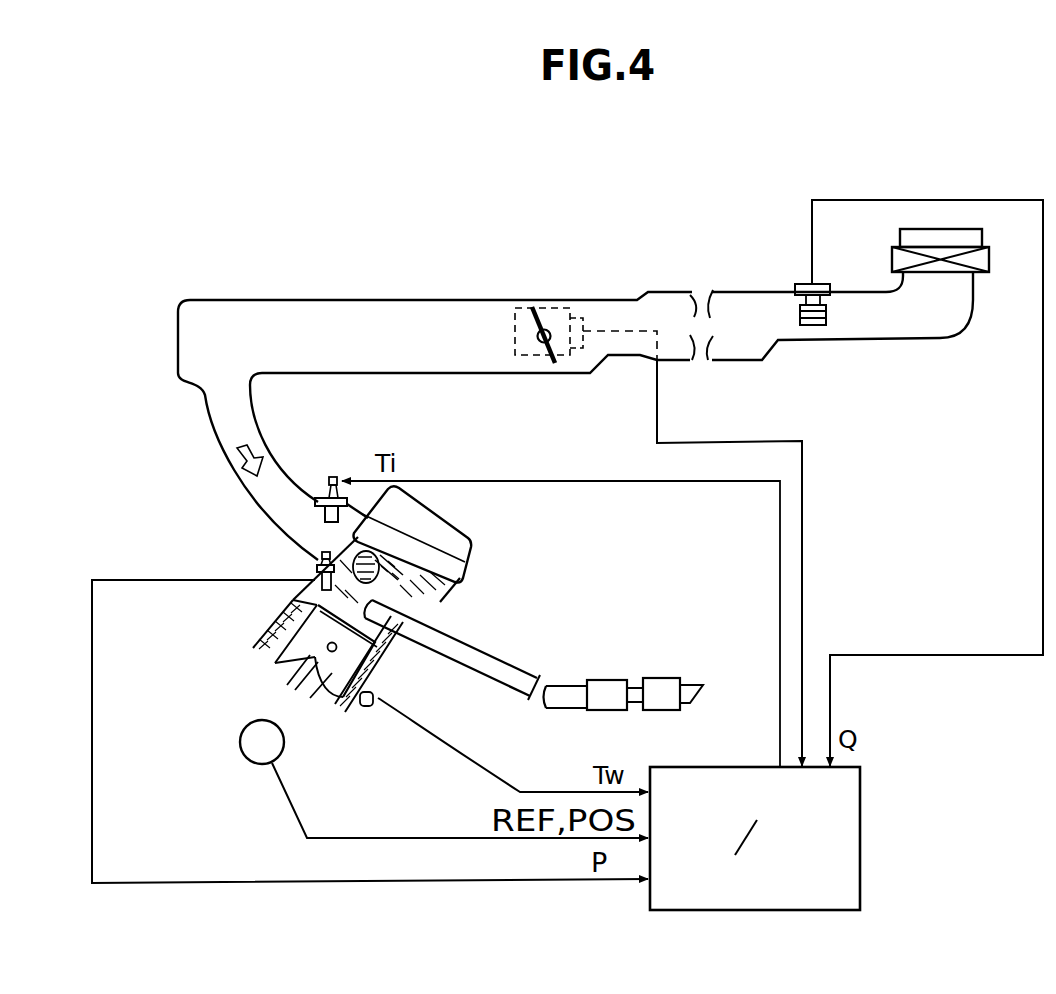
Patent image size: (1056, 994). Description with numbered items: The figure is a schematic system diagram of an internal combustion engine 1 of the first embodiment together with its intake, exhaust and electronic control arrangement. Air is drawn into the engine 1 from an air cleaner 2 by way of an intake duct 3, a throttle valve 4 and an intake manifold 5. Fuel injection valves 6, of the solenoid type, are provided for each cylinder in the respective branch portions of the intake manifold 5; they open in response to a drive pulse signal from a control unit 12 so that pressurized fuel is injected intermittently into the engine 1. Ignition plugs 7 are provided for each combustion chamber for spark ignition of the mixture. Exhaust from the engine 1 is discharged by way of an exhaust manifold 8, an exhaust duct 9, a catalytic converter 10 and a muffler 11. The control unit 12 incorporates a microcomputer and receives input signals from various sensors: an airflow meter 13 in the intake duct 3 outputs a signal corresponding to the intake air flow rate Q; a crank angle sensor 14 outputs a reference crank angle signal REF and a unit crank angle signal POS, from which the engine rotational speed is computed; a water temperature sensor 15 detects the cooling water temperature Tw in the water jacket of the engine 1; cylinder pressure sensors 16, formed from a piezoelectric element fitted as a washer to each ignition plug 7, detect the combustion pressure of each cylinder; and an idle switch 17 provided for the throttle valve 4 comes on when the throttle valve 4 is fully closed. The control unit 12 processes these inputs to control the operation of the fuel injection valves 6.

The internal combustion engine 1 is at (470, 600).
The air cleaner 2 is at (992, 266).
The intake duct 3 is at (733, 291).
The throttle valve 4 is at (540, 370).
The intake manifold 5 is at (205, 403).
The fuel injection valve 6 is at (328, 478).
The ignition plug 7 is at (318, 561).
The exhaust manifold 8 is at (472, 668).
The exhaust duct 9 is at (575, 709).
The catalytic converter 10 is at (620, 679).
The muffler 11 is at (672, 677).
The control unit 12 is at (862, 811).
The airflow meter 13 is at (805, 284).
The crank angle sensor 14 is at (240, 750).
The water temperature sensor 15 is at (378, 696).
The cylinder pressure sensor 16 is at (312, 590).
The idle switch 17 is at (553, 305).